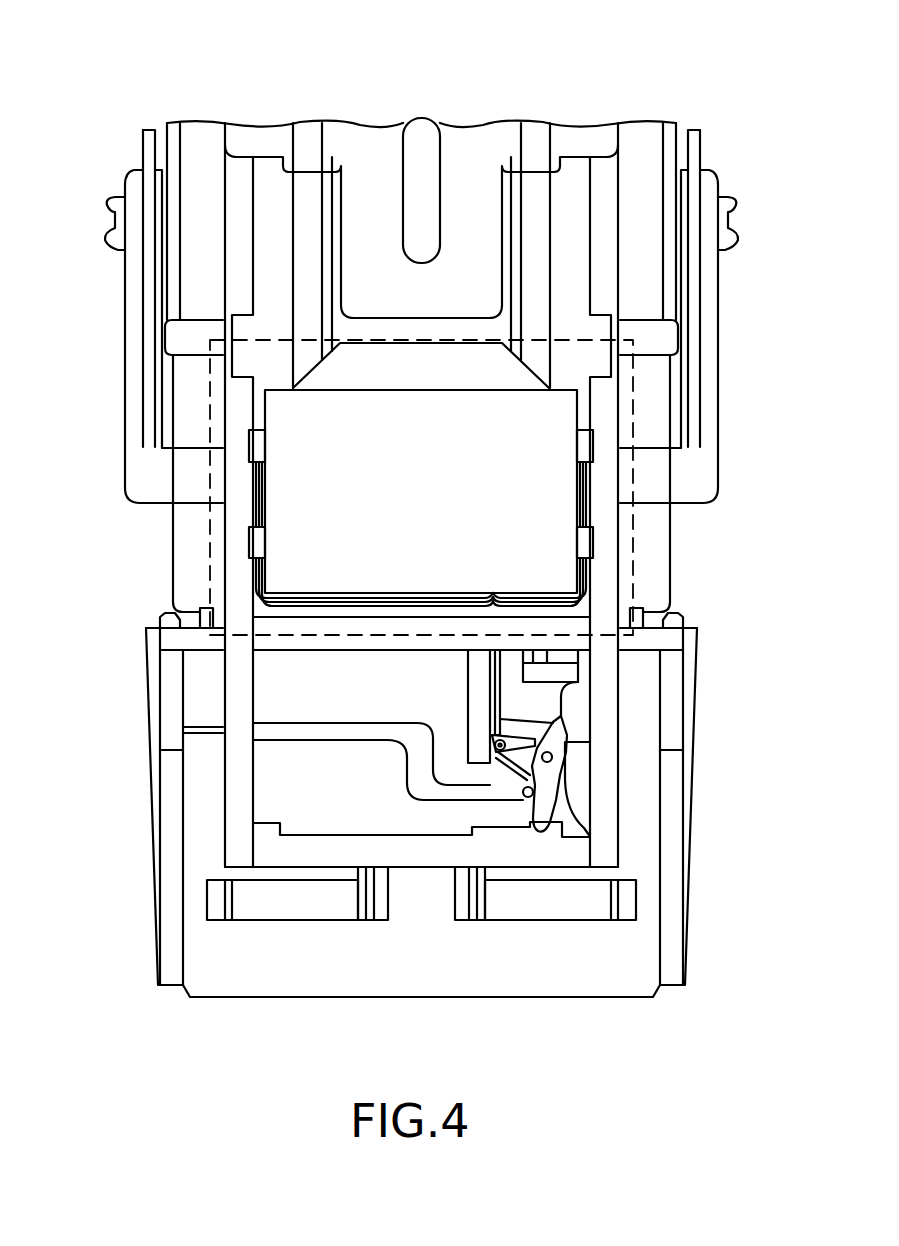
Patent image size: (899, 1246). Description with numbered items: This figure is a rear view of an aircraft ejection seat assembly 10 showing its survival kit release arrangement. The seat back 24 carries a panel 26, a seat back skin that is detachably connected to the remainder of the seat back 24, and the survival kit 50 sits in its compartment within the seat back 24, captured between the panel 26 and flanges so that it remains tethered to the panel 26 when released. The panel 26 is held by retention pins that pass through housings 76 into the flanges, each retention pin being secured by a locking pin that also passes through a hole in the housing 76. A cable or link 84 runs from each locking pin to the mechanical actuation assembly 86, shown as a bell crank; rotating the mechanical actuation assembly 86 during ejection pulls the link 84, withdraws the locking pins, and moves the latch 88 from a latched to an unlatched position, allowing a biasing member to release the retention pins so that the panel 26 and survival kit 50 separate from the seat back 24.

The aircraft ejection seat assembly 10 is at (718, 90).
The seat back 24 is at (107, 327).
The panel 26 is at (427, 378).
The survival kit 50 is at (427, 550).
The housing 76 is at (265, 447).
The link 84 is at (262, 490).
The mechanical actuation assembly 86 is at (523, 753).
The latch 88 is at (513, 732).